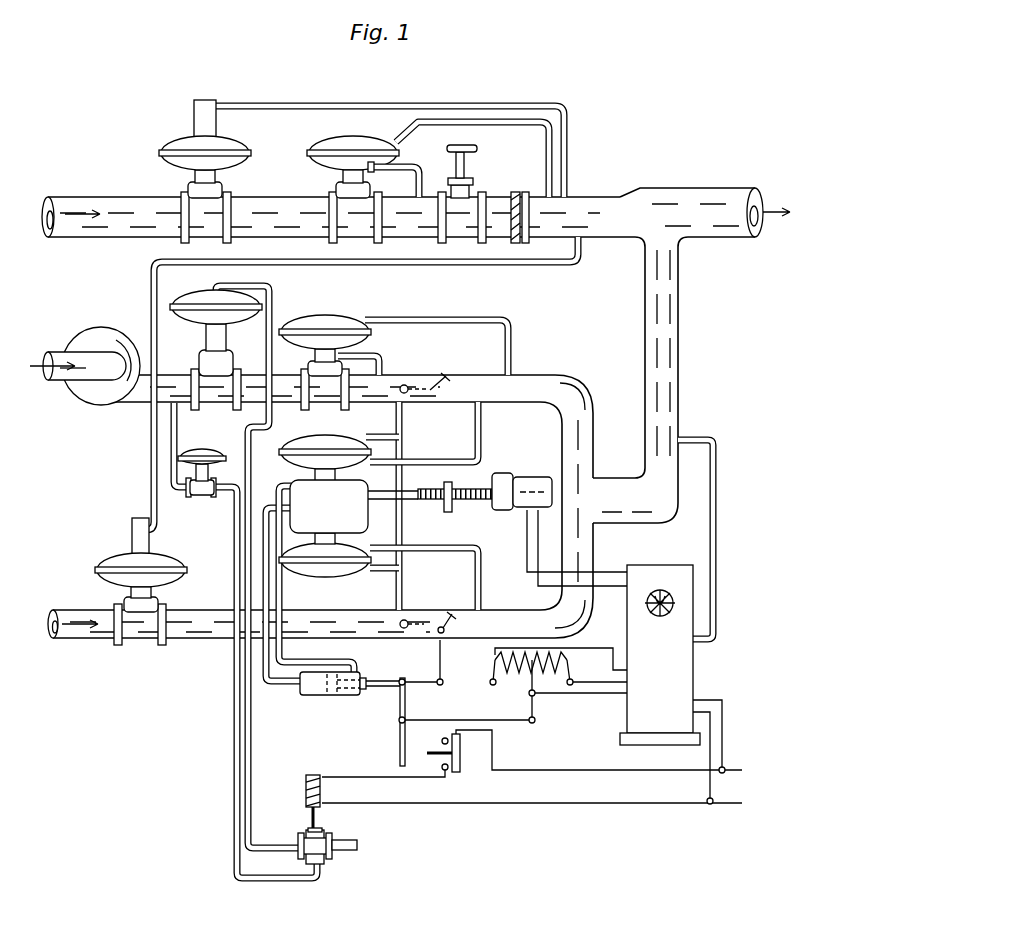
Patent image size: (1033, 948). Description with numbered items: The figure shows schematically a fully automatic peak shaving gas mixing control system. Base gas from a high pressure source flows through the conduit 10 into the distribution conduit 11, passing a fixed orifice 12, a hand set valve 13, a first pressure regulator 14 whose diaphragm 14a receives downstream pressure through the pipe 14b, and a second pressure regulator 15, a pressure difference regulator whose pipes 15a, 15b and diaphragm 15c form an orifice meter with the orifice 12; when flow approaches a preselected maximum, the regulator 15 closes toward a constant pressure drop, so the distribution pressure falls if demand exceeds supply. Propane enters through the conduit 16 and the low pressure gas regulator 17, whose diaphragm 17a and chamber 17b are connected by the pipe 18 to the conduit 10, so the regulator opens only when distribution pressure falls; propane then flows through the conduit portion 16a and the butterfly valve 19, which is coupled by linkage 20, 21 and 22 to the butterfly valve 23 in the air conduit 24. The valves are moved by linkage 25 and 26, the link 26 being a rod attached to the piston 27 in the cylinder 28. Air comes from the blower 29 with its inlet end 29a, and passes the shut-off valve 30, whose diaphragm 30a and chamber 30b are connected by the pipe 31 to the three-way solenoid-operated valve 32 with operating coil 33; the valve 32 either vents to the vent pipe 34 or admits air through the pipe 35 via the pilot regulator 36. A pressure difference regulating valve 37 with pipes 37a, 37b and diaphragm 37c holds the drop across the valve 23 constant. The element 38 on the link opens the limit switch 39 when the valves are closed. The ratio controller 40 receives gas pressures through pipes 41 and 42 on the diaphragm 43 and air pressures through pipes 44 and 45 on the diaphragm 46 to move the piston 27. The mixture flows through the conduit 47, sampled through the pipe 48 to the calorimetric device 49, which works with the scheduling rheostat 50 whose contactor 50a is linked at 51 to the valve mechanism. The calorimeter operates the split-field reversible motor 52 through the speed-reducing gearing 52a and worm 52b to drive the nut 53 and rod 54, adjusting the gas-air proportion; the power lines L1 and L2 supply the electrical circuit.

The conduit 10 is at (100, 200).
The distribution conduit 11 is at (725, 240).
The fixed orifice 12 is at (519, 195).
The hand set valve 13 is at (472, 185).
The first pressure regulator 14 is at (180, 190).
The diaphragm 14a is at (165, 150).
The pipe 14b is at (236, 110).
The second pressure regulator 15 is at (340, 197).
The pipe 15a is at (402, 170).
The pipe 15b is at (365, 135).
The diaphragm 15c is at (312, 156).
The conduit 16 is at (89, 640).
The conduit portion 16a is at (190, 640).
The low pressure gas regulator 17 is at (160, 600).
The diaphragm 17a is at (106, 580).
The chamber 17b is at (128, 556).
The pipe 18 is at (150, 468).
The butterfly valve 19 is at (449, 636).
The linkage 20 is at (405, 634).
The linkage 21 is at (406, 578).
The linkage 22 is at (428, 404).
The butterfly valve 23 is at (448, 385).
The air conduit 24 is at (547, 373).
The linkage 25 is at (442, 686).
The link 26 is at (388, 689).
The piston 27 is at (335, 696).
The cylinder 28 is at (300, 695).
The blower 29 is at (88, 327).
The inlet end 29a is at (70, 382).
The shut-off valve 30 is at (208, 362).
The diaphragm 30a is at (262, 308).
The chamber 30b is at (175, 293).
The pipe 31 is at (262, 365).
The three-way solenoid-operated valve 32 is at (306, 840).
The operating coil 33 is at (305, 784).
The vent pipe 34 is at (355, 850).
The pipe 35 is at (270, 879).
The pilot regulator 36 is at (205, 498).
The pressure difference regulating valve 37 is at (312, 368).
The pipe 37a is at (383, 352).
The pipe 37b is at (448, 317).
The diaphragm 37c is at (385, 303).
The element 38 is at (399, 750).
The limit switch 39 is at (449, 771).
The ratio controller 40 is at (329, 506).
The pipe 41 is at (386, 580).
The pipe 42 is at (481, 570).
The diaphragm 43 is at (315, 578).
The pipe 44 is at (390, 423).
The pipe 45 is at (483, 420).
The diaphragm 46 is at (286, 455).
The conduit 47 is at (679, 350).
The pipe 48 is at (714, 538).
The calorimetric device 49 is at (660, 655).
The scheduling rheostat 50 is at (564, 665).
The contactor 50a is at (529, 690).
The link 51 is at (528, 724).
The split-field reversible motor 52 is at (533, 478).
The speed-reducing gearing 52a is at (501, 478).
The worm 52b is at (528, 512).
The nut 53 is at (449, 513).
The rod 54 is at (428, 500).
The power line 1 L1 is at (730, 741).
The power line 2 L2 is at (544, 766).